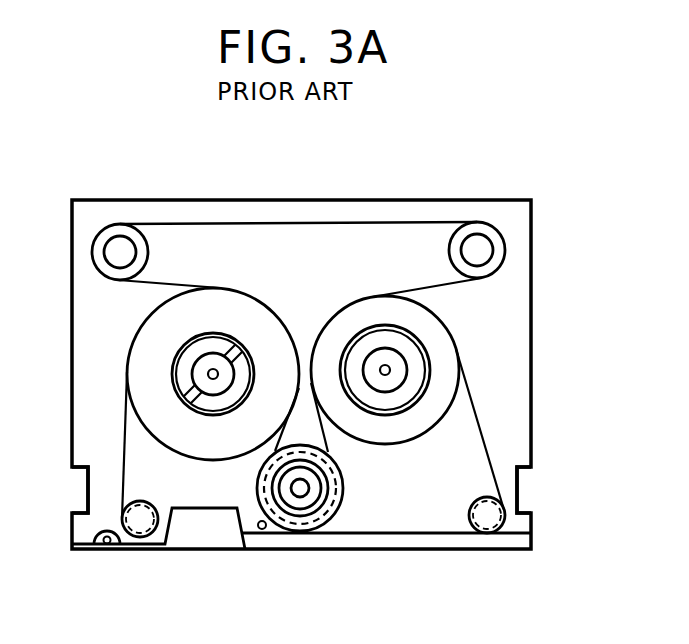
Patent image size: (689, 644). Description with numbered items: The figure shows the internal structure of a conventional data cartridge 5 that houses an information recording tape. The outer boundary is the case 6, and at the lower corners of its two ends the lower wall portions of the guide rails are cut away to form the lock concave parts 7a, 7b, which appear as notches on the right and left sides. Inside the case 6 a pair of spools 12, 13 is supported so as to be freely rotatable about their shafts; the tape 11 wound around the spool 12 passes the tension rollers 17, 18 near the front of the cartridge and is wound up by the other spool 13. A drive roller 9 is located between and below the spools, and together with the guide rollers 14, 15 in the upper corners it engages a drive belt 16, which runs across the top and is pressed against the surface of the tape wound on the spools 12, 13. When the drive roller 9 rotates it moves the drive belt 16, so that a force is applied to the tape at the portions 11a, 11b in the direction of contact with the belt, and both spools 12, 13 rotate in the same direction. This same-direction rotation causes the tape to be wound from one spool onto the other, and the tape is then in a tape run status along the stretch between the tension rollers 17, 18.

The data cartridge 5 is at (386, 152).
The case 6 is at (478, 200).
The lock concave part 7a is at (517, 490).
The lock concave part 7b is at (88, 491).
The drive roller 9 is at (343, 520).
The tape 11 is at (408, 533).
The tape portion 11a is at (219, 367).
The tape portion 11b is at (414, 341).
The spool 12 is at (187, 357).
The spool 13 is at (413, 372).
The guide roller 14 is at (130, 244).
The guide roller 15 is at (487, 249).
The drive belt 16 is at (301, 223).
The tension roller 17 is at (140, 537).
The tension roller 18 is at (487, 527).